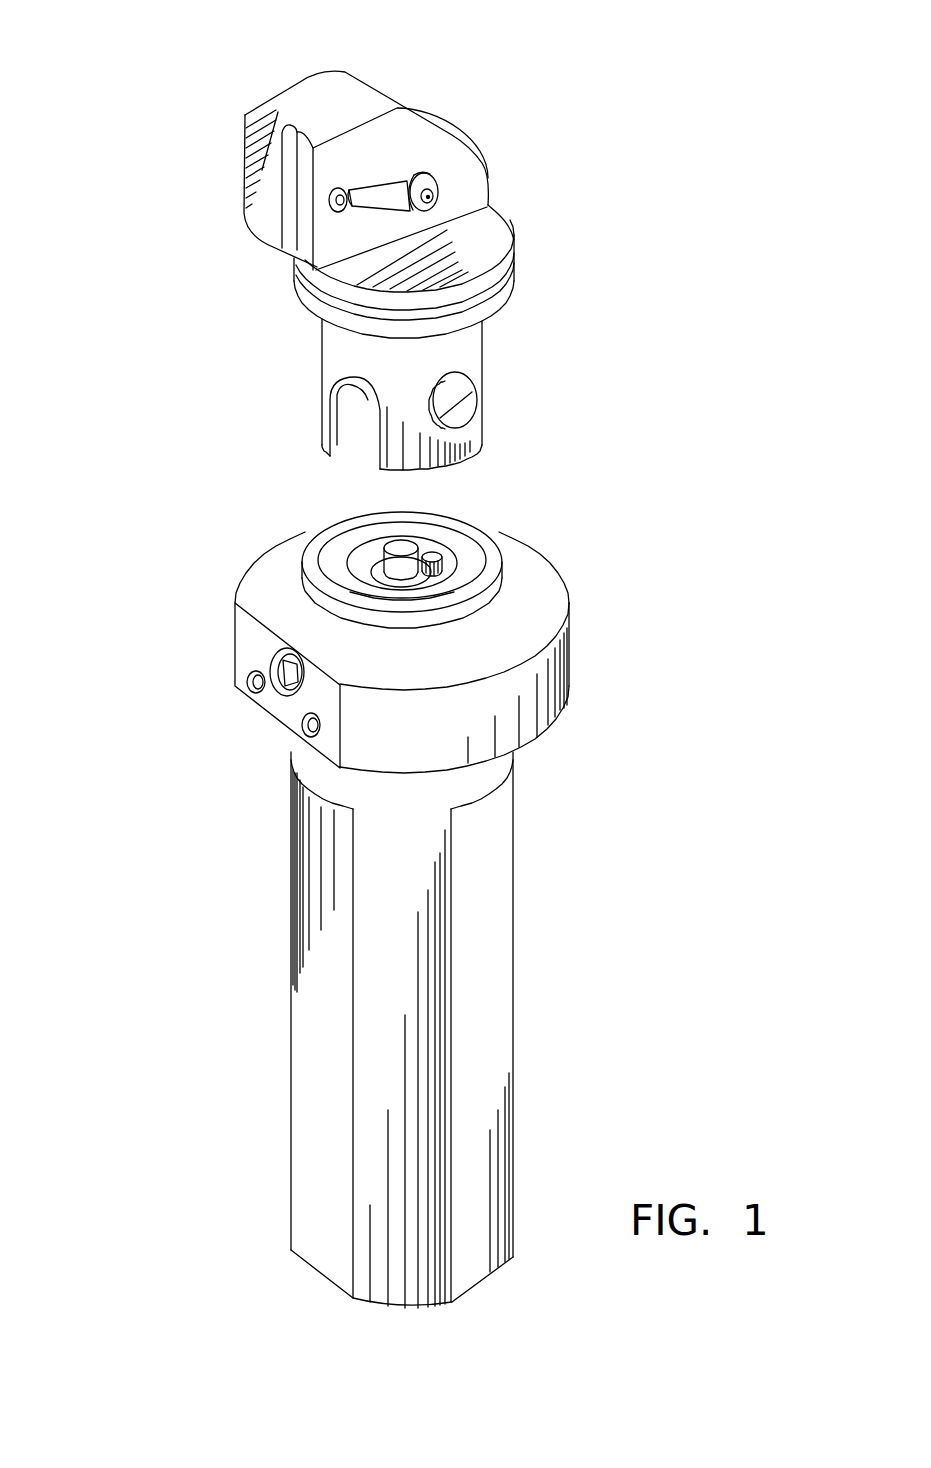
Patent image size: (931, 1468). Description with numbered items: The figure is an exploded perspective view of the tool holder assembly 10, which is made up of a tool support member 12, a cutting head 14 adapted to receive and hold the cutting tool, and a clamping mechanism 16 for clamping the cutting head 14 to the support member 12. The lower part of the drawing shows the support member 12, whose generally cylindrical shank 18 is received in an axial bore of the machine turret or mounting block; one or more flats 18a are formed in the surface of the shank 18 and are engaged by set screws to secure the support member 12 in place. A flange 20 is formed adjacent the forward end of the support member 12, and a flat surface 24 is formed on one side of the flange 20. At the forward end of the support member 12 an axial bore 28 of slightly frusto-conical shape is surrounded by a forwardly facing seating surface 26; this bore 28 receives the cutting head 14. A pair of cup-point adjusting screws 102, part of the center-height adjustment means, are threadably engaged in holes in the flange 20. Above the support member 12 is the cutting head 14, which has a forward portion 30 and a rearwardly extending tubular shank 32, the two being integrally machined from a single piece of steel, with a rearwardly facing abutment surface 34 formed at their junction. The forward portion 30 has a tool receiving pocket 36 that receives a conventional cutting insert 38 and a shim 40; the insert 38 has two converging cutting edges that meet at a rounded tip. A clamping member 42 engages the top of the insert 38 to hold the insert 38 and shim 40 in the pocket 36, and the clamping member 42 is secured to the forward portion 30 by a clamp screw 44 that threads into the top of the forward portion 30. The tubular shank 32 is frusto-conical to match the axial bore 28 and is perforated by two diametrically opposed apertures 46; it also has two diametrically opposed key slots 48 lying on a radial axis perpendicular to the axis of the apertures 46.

The tool holder assembly 10 is at (680, 500).
The tool support member 12 is at (513, 995).
The cutting head 14 is at (490, 173).
The clamping mechanism 16 is at (330, 553).
The shank 18 is at (397, 1280).
The flats 18a is at (318, 1137).
The flange 20 is at (540, 692).
The flat surface 24 is at (290, 718).
The seating surface 26 is at (490, 570).
The axial bore 28 is at (458, 555).
The forward portion 30 is at (313, 90).
The tubular shank 32 is at (483, 347).
The abutment surface 34 is at (308, 318).
The tool receiving pocket 36 is at (292, 96).
The cutting insert 38 is at (303, 248).
The shim 40 is at (288, 213).
The clamping member 42 is at (392, 192).
The clamp screw 44 is at (436, 198).
The apertures 46 is at (468, 412).
The key slots 48 is at (352, 432).
The adjusting screws 102 is at (245, 680).